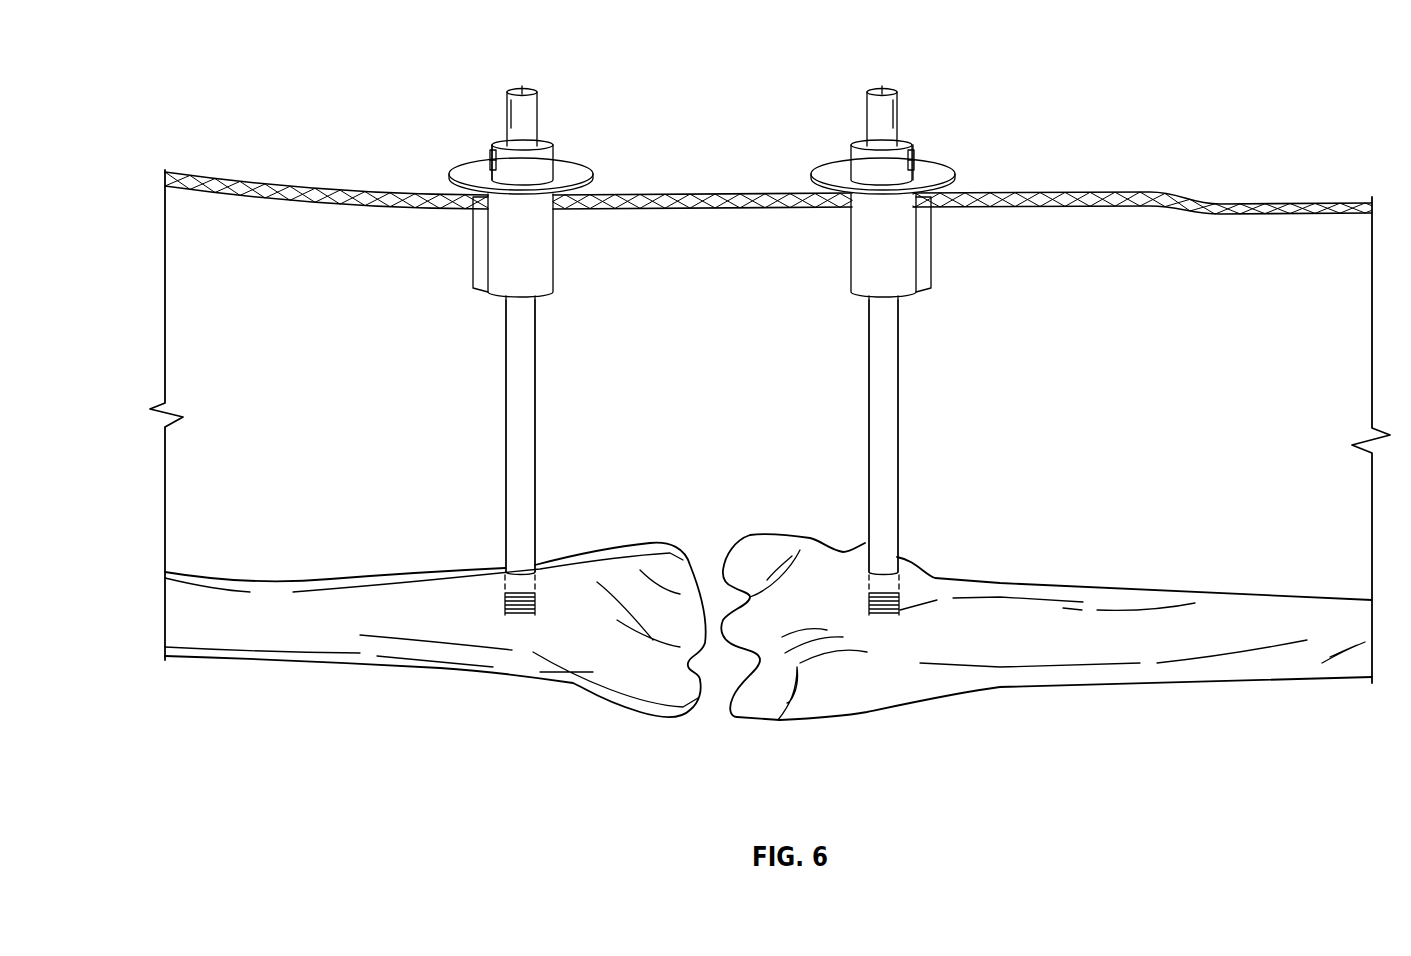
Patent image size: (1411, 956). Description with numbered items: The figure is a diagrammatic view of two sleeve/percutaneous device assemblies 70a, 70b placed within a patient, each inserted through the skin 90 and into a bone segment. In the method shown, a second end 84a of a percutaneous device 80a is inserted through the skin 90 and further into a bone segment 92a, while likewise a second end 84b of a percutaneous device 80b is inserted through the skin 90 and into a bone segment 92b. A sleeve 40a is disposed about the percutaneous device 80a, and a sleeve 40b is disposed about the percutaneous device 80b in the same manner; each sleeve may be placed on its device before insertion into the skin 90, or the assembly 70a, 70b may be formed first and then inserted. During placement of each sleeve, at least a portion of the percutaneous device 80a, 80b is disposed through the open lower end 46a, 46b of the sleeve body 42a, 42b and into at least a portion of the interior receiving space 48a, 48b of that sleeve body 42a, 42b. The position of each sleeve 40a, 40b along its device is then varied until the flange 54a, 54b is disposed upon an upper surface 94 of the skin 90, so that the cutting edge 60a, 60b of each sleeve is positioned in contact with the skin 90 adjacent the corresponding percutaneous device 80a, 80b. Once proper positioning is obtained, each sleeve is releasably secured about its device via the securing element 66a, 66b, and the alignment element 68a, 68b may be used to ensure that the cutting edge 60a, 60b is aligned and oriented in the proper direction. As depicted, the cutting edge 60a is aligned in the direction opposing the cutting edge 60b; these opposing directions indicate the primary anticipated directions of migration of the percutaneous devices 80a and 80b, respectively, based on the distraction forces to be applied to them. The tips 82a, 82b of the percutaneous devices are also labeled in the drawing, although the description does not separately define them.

The sleeve 40a is at (558, 149).
The sleeve 40b is at (845, 152).
The sleeve body 42a is at (553, 247).
The sleeve body 42b is at (852, 247).
The open lower end 46a is at (542, 293).
The open lower end 46b is at (863, 295).
The interior receiving space 48a is at (513, 297).
The interior receiving space 48b is at (883, 298).
The flange 54a is at (580, 173).
The flange 54b is at (825, 177).
The cutting edge 60a is at (480, 220).
The cutting edge 60b is at (925, 222).
The securing element 66a is at (490, 160).
The securing element 66b is at (915, 160).
The alignment element 68a is at (490, 167).
The alignment element 68b is at (917, 167).
The assembly 70a is at (493, 134).
The assembly 70b is at (912, 134).
The percutaneous device 80a is at (542, 110).
The percutaneous device 80b is at (865, 115).
The first pin tip 82a is at (523, 88).
The second pin tip 82b is at (882, 88).
The second end 84a is at (520, 617).
The second end 84b is at (878, 617).
The skin 90 is at (1350, 200).
The bone segment 92a is at (282, 610).
The bone segment 92b is at (1247, 612).
The upper surface 94 is at (1273, 198).